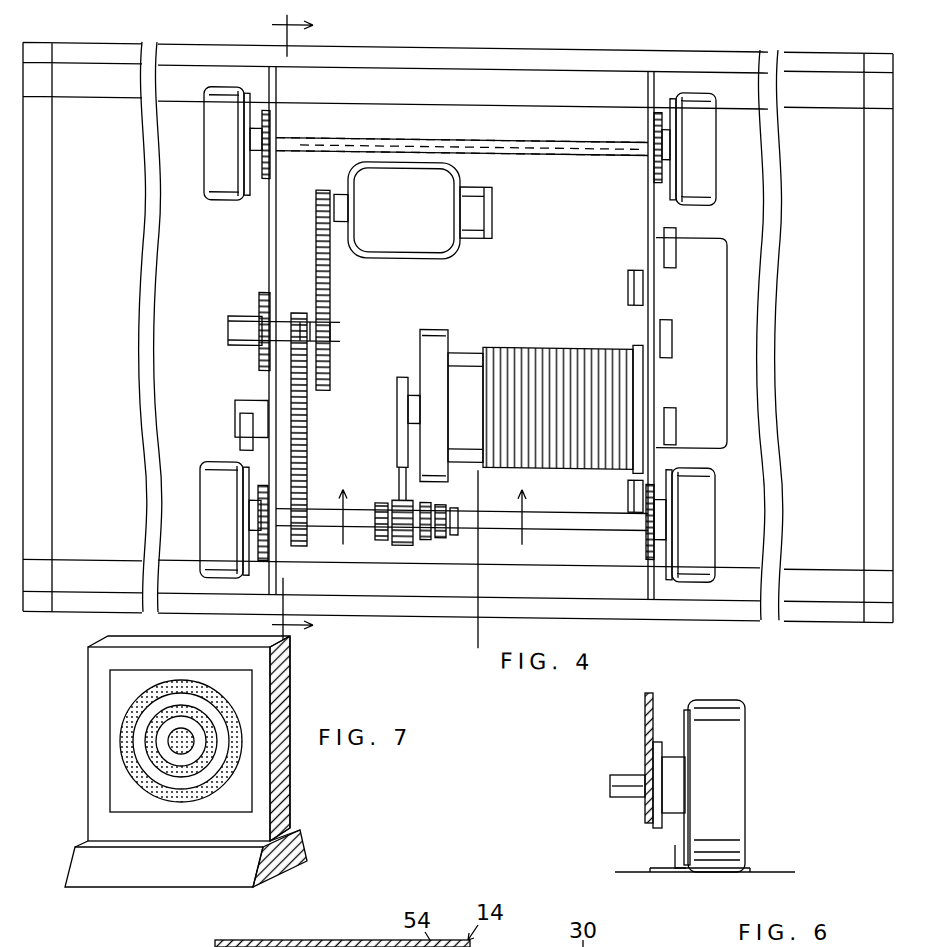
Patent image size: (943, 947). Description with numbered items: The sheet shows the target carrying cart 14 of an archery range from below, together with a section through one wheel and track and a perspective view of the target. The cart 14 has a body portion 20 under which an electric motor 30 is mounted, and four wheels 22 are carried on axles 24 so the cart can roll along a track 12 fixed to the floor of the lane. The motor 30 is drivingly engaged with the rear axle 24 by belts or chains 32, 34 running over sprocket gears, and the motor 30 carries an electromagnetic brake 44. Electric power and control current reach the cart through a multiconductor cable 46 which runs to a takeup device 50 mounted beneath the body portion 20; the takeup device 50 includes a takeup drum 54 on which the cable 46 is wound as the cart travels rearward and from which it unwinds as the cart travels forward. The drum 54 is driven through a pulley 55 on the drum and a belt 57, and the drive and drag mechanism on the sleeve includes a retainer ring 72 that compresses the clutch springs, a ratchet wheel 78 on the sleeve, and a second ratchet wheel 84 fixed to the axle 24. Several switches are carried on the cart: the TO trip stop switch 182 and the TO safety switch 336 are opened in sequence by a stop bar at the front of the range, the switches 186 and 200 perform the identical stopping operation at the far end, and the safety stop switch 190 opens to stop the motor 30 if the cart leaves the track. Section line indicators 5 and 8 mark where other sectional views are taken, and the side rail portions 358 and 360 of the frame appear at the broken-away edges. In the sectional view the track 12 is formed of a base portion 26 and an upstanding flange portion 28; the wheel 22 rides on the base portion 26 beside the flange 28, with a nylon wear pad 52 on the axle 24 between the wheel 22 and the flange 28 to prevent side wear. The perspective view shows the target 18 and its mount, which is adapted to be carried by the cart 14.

In FIG. 4, the section line 5- 5 is at (293, 326).
In FIG. 4, the section line 8- 8 is at (432, 528).
In FIG. 6, the track 12 is at (651, 890).
In FIG. 4, the target carrying cart 14 is at (541, 35).
In FIG. 7, the target carrying cart 14 is at (118, 899).
In FIG. 7, the target 18 is at (135, 738).
In FIG. 4, the body portion 20 is at (400, 70).
In FIG. 6, the body portion 20 is at (645, 717).
In FIG. 4, the wheel 22 is at (215, 165).
In FIG. 6, the wheel 22 is at (725, 748).
In FIG. 4, the axle 24 is at (483, 140).
In FIG. 6, the axle 24 is at (610, 795).
In FIG. 6, the base portion 26 is at (720, 873).
In FIG. 6, the upstanding flange portion 28 is at (675, 850).
In FIG. 4, the electric motor 30 is at (392, 211).
In FIG. 4, the belt or chain 32 is at (318, 264).
In FIG. 4, the belt or chain 34 is at (308, 436).
In FIG. 4, the electromagnetic brake 44 is at (493, 204).
In FIG. 4, the multiconductor cable 46 is at (478, 640).
In FIG. 4, the takeup device 50 is at (386, 438).
In FIG. 6, the wear pad 52 is at (686, 712).
In FIG. 4, the takeup drum 54 is at (480, 343).
In FIG. 4, the pulley 55 is at (396, 378).
In FIG. 4, the belt 57 is at (404, 460).
In FIG. 4, the retainer ring 72 is at (426, 537).
In FIG. 4, the ratchet wheel 78 is at (442, 535).
In FIG. 4, the second ratchet wheel 84 is at (380, 537).
In FIG. 4, the TO trip stop switch 182 is at (628, 284).
In FIG. 4, the switch 186 is at (680, 254).
In FIG. 4, the safety stop switch 190 is at (238, 404).
In FIG. 4, the switch 200 is at (678, 428).
In FIG. 4, the TO safety switch 336 is at (628, 487).
In FIG. 4, the side rail 358 is at (45, 94).
In FIG. 4, the side rail end 360 is at (38, 580).